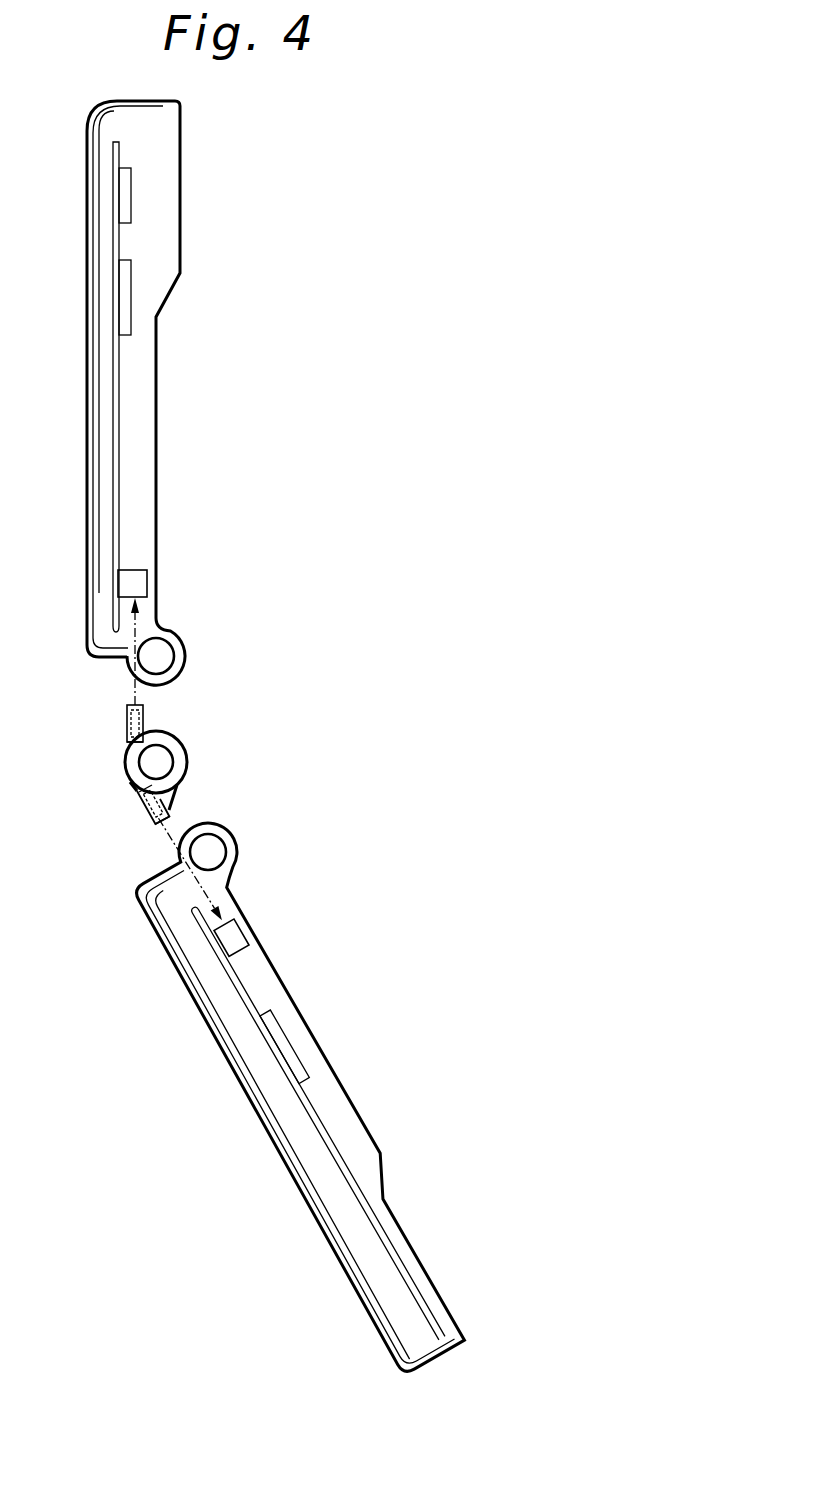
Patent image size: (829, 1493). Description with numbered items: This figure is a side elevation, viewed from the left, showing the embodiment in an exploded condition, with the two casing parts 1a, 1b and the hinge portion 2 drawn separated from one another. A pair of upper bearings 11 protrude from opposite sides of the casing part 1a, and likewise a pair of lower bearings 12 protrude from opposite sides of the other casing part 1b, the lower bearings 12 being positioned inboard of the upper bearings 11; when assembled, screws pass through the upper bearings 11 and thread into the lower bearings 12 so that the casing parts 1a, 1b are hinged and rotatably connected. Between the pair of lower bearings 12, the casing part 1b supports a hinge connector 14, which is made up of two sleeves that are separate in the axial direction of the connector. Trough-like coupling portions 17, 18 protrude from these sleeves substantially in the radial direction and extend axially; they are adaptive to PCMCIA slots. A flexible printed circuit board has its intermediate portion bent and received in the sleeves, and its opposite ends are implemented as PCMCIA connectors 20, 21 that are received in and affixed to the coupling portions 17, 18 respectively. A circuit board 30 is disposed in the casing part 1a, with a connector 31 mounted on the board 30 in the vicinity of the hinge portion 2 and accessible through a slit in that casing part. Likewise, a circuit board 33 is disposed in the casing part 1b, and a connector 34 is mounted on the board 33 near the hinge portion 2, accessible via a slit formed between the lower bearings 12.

The casing part 1a is at (160, 274).
The casing part 1b is at (372, 1167).
The hinge portion 2 is at (321, 672).
The upper bearing 11 is at (130, 662).
The lower bearing 12 is at (237, 857).
The hinge connector 14 is at (125, 763).
The coupling portion 17 is at (147, 813).
The coupling portion 18 is at (143, 723).
The PCMCIA connector 20 is at (145, 710).
The PCMCIA connector 21 is at (140, 792).
The circuit board 30 is at (118, 415).
The connector 31 is at (148, 583).
The circuit board 33 is at (318, 1120).
The connector 34 is at (235, 942).